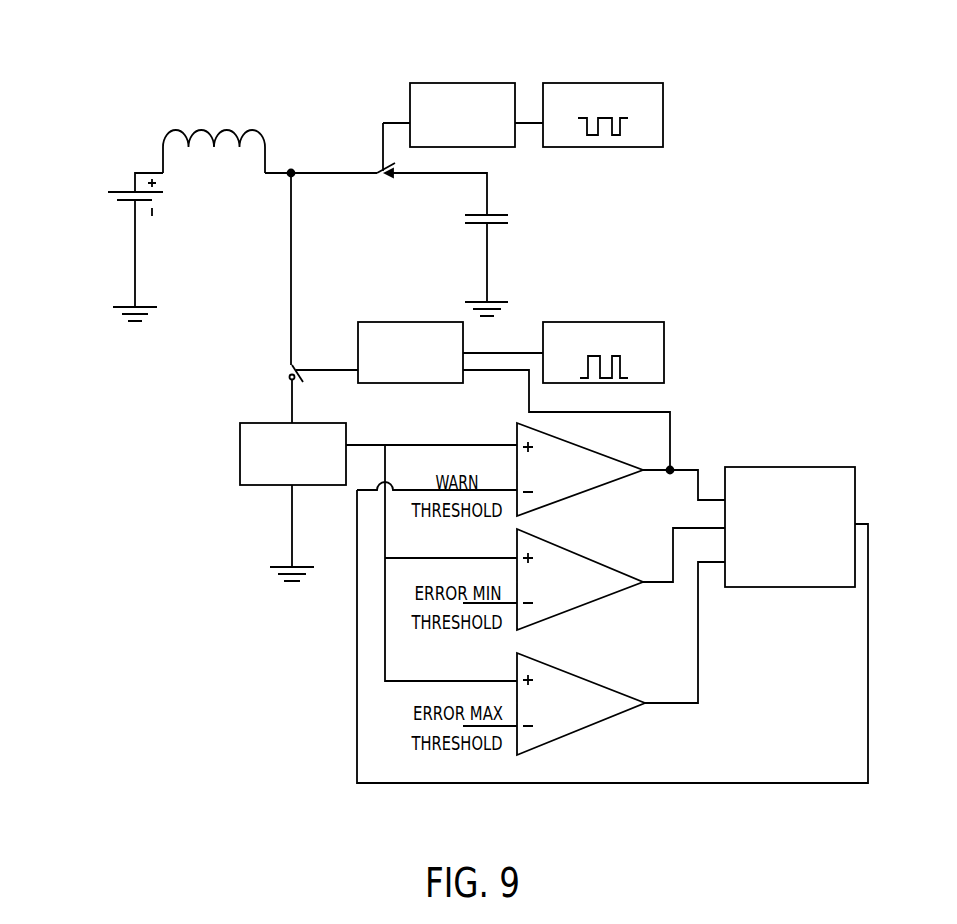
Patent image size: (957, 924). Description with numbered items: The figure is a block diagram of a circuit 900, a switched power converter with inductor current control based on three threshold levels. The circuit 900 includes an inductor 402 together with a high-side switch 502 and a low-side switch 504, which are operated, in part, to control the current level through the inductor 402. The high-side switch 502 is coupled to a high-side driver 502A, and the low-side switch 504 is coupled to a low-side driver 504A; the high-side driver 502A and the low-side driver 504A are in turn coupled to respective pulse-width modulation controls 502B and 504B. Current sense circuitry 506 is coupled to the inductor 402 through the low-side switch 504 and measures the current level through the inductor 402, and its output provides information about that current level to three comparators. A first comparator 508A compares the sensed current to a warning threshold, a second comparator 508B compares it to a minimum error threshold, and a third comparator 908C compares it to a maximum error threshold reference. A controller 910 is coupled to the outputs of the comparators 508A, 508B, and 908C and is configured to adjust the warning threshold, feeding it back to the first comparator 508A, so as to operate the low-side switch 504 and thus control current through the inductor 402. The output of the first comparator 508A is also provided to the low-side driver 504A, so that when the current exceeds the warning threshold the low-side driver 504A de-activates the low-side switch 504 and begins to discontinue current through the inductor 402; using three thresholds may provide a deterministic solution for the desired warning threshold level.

The circuit 900 is at (110, 123).
The inductor 402 is at (203, 130).
The high-side switch 502 is at (378, 170).
The high-side driver 502A is at (503, 148).
The pulse-width modulation control 502B is at (632, 148).
The low-side switch 504 is at (294, 363).
The low-side driver 504A is at (383, 320).
The pulse-width modulation control 504B is at (628, 320).
The current sense circuitry 506 is at (240, 468).
The first comparator 508A is at (582, 447).
The second comparator 508B is at (553, 544).
The third comparator 908C is at (553, 667).
The controller 910 is at (830, 467).